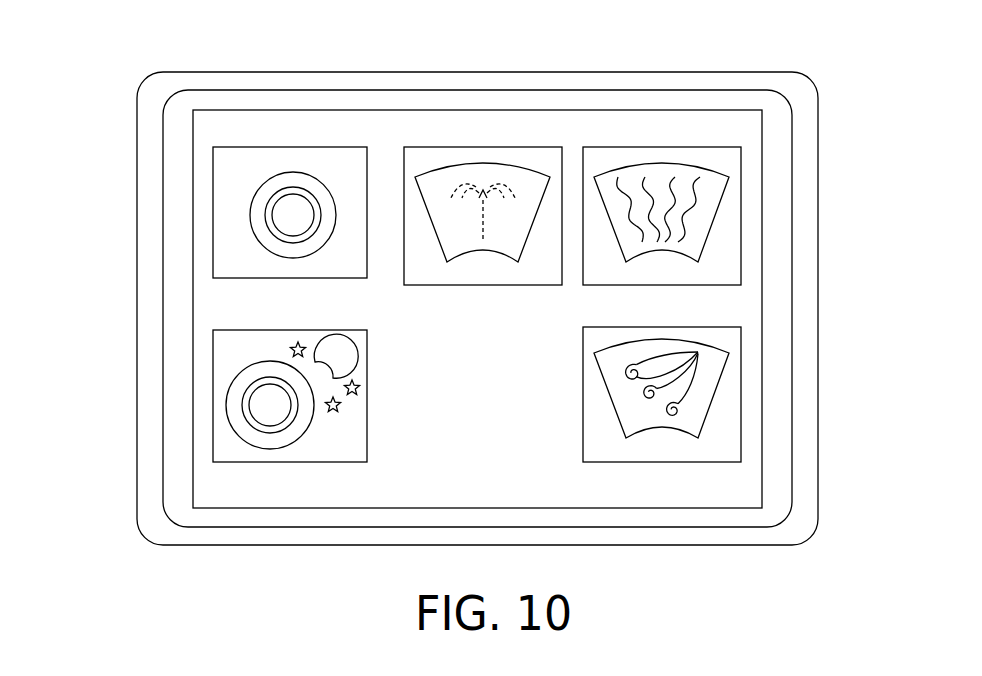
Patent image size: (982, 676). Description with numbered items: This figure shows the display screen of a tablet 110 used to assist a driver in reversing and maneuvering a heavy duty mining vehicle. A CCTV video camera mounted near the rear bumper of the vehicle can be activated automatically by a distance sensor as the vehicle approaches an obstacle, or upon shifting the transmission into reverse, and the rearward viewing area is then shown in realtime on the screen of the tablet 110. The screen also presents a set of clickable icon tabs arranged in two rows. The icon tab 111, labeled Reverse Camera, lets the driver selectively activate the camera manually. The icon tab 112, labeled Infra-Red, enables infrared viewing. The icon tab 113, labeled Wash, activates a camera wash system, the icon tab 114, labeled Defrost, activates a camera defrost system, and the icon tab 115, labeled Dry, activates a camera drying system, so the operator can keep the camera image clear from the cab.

The tablet 110 is at (137, 250).
The icon tab 111 is at (248, 147).
The icon tab 112 is at (367, 423).
The icon tab 113 is at (448, 148).
The icon tab 114 is at (698, 150).
The icon tab 115 is at (741, 435).